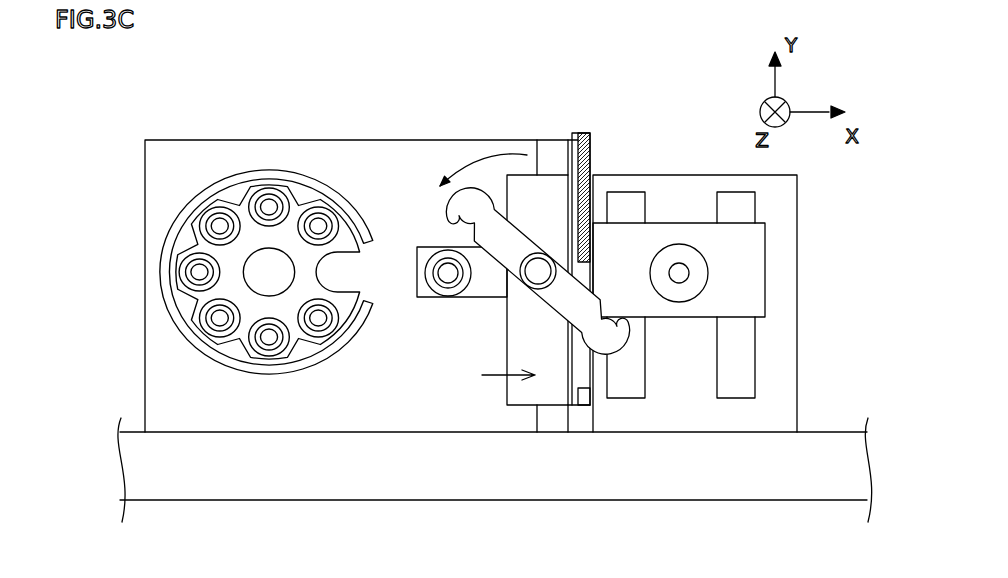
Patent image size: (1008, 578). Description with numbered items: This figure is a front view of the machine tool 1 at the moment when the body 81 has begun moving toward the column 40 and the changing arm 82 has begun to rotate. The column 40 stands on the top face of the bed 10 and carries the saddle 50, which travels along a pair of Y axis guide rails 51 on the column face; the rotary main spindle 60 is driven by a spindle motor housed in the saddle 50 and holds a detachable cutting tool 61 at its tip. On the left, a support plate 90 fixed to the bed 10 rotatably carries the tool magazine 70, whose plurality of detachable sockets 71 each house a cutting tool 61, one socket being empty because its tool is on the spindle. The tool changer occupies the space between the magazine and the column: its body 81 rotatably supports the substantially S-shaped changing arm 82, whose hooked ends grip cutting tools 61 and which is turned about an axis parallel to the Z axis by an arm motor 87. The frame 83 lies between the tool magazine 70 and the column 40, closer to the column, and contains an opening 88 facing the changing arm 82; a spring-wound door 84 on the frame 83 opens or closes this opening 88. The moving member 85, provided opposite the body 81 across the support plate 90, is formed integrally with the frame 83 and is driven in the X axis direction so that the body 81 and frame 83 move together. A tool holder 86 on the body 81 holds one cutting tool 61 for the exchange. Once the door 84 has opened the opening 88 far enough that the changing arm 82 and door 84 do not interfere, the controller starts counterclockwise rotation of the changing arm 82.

The machine tool 1 is at (200, 100).
The bed 10 is at (817, 450).
The column 40 is at (787, 183).
The saddle 50 is at (753, 302).
The Y axis guide rails 51 is at (730, 207).
The rotary main spindle 60 is at (697, 253).
The cutting tool 61 is at (320, 226).
The tool magazine 70 is at (192, 245).
The sockets 71 is at (212, 222).
The body 81 is at (564, 185).
The changing arm 82 is at (618, 338).
The frame 83 is at (590, 141).
The door 84 is at (586, 140).
The moving member 85 is at (549, 178).
The tool holder 86 is at (450, 300).
The arm motor 87 is at (533, 272).
The opening 88 is at (597, 385).
The support plate 90 is at (146, 378).